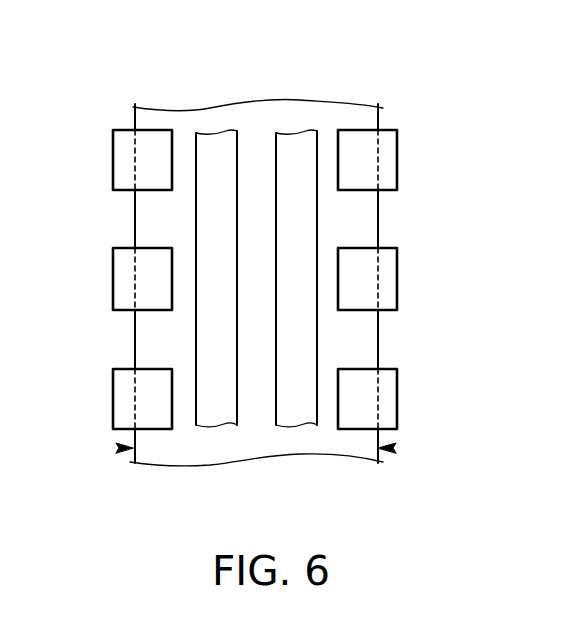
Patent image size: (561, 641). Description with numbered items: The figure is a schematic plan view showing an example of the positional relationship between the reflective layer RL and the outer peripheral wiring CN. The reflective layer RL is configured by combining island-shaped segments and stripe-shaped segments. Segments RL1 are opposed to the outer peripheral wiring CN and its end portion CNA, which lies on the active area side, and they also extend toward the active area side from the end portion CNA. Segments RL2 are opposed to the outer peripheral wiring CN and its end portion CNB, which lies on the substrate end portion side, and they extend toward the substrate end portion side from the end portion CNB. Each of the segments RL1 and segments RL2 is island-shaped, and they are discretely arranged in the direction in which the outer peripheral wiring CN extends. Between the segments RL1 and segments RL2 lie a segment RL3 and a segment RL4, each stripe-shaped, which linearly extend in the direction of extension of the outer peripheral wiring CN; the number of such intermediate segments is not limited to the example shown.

The reflective layer RL is at (138, 45).
The segments RL1 is at (156, 142).
The segments RL2 is at (360, 142).
The segment RL3 is at (217, 142).
The segment RL4 is at (295, 142).
The outer peripheral wiring CN is at (257, 456).
The end portion CNA is at (118, 450).
The end portion CNB is at (395, 450).